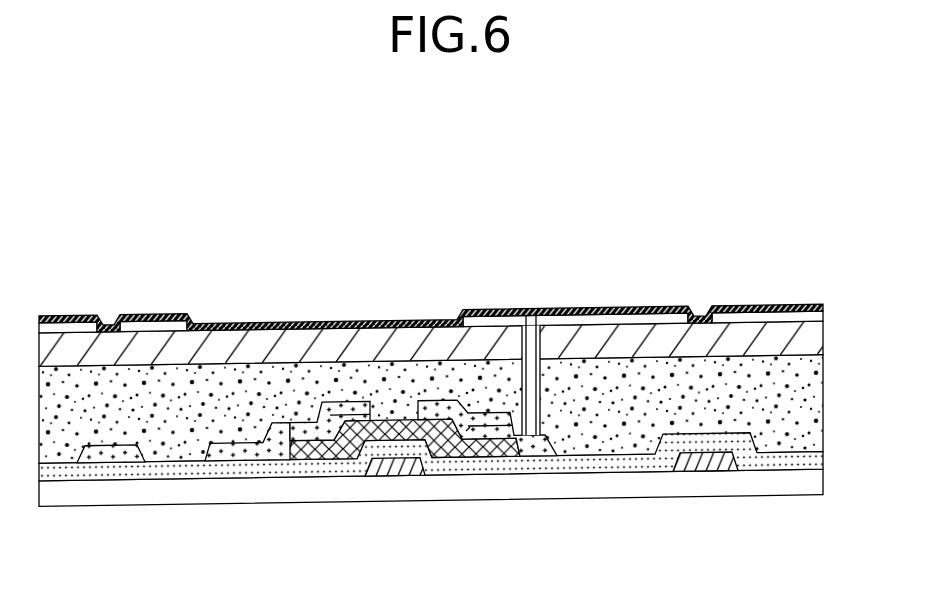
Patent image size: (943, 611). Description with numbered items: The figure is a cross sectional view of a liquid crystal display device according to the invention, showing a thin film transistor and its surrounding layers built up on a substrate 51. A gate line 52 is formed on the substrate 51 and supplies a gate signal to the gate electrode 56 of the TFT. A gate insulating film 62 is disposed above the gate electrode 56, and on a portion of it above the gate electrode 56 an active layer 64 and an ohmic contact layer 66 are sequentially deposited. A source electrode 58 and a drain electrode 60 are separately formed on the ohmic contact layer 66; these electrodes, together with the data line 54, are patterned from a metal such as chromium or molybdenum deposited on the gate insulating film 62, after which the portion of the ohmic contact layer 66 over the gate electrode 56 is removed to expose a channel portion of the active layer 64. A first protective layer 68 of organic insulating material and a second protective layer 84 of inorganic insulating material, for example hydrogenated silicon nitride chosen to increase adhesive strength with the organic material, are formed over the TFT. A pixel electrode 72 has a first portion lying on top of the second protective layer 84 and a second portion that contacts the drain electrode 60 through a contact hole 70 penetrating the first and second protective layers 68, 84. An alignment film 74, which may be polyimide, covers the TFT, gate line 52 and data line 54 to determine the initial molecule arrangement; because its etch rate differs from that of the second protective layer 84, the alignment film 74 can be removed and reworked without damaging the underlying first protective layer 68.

The substrate 51 is at (803, 485).
The gate line 52 is at (712, 458).
The data line 54 is at (122, 458).
The gate electrode 56 is at (397, 478).
The source electrode 58 is at (340, 405).
The drain electrode 60 is at (517, 450).
The gate insulating film 62 is at (823, 459).
The active layer 64 is at (328, 460).
The ohmic contact layer 66 is at (472, 448).
The first protective layer 68 is at (815, 390).
The contact hole 70 is at (538, 445).
The pixel electrode 72 is at (822, 312).
The alignment film 74 is at (818, 307).
The second protective layer 84 is at (818, 348).